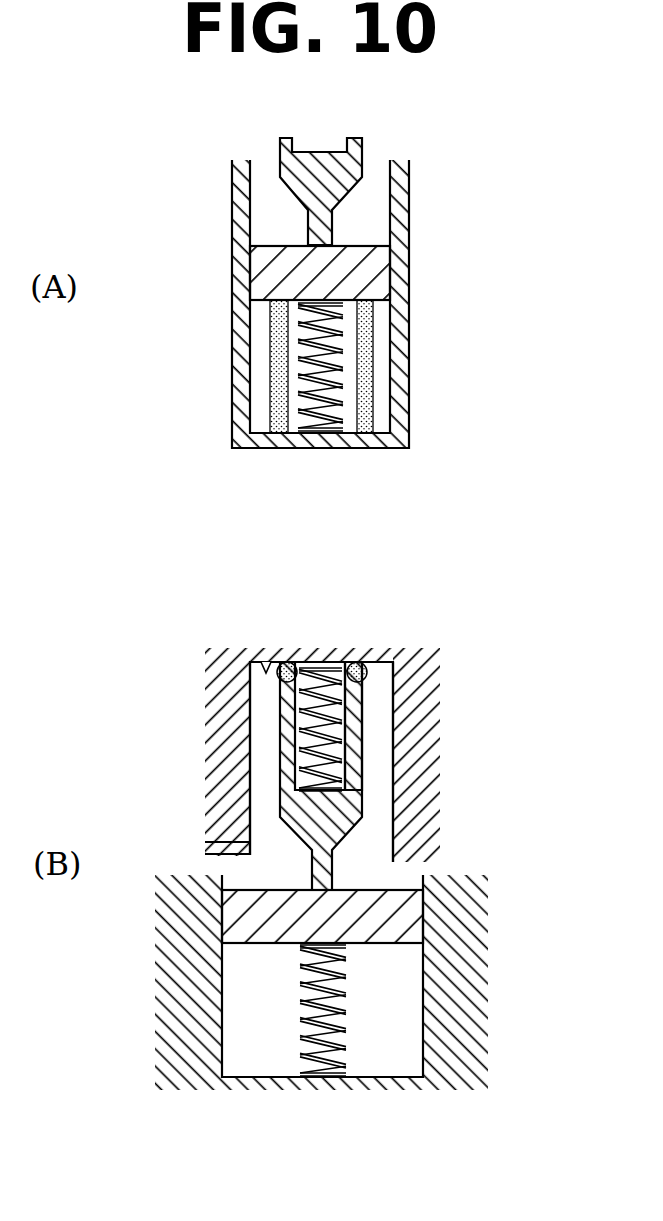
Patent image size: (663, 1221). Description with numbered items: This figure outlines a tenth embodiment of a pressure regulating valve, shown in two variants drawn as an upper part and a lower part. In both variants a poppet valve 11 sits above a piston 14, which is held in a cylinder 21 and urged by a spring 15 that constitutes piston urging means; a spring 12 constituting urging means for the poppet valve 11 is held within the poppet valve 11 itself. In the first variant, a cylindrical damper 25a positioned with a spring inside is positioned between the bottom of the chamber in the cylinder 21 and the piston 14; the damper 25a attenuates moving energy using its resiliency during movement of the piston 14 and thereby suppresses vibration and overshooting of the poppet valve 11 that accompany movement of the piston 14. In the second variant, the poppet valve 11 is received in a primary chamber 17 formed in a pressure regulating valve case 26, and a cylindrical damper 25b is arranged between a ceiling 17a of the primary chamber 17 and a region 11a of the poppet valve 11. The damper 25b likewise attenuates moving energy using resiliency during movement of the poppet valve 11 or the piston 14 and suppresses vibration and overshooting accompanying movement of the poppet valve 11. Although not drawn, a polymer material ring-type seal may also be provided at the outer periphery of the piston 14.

The poppet valve 11 is at (348, 165).
The region of the poppet valve 11a is at (362, 708).
The spring 12 is at (300, 736).
The piston 14 is at (380, 273).
The spring 15 is at (342, 365).
The primary chamber 17 is at (266, 718).
The ceiling of the primary chamber 17a is at (257, 661).
The cylinder 21 is at (405, 318).
The cylindrical damper 25a is at (365, 403).
The cylindrical damper 25b is at (357, 668).
The pressure regulating valve case 26 is at (423, 677).